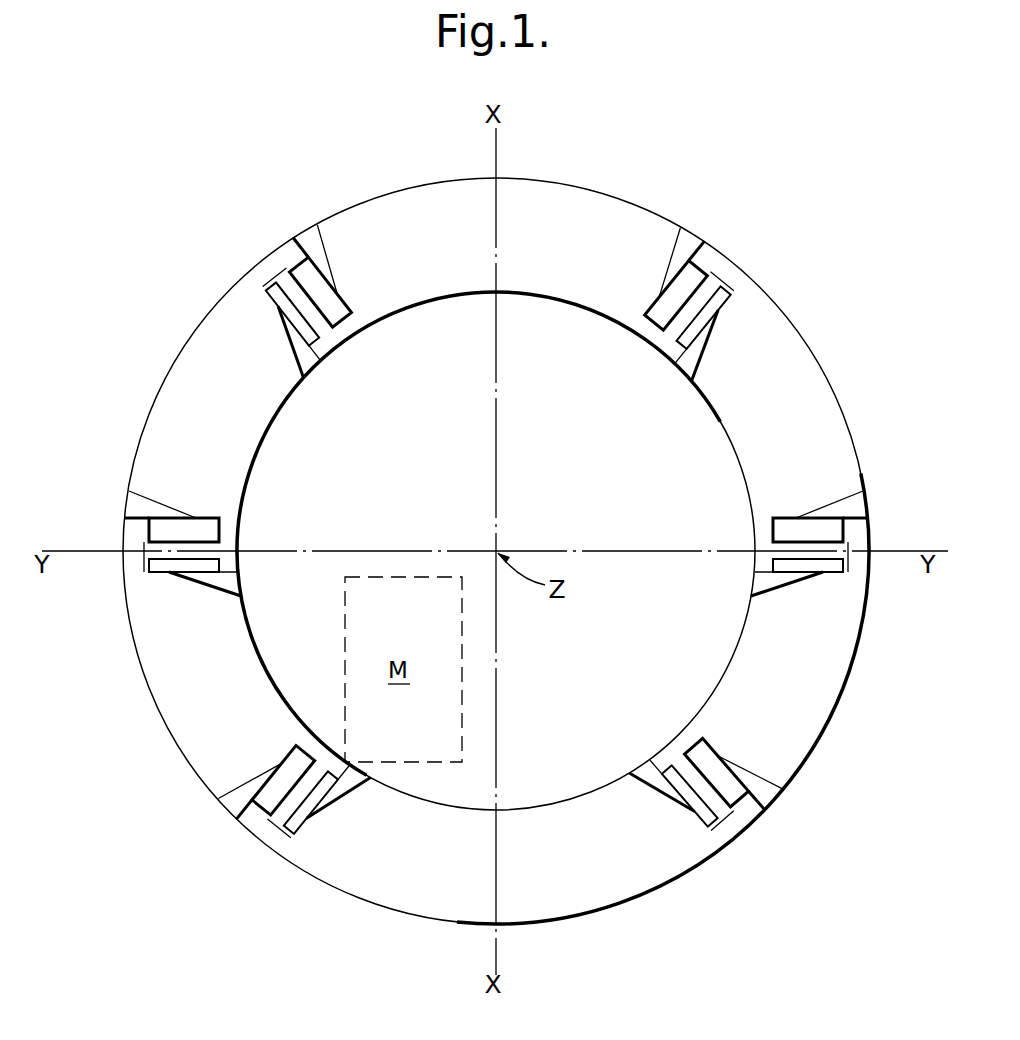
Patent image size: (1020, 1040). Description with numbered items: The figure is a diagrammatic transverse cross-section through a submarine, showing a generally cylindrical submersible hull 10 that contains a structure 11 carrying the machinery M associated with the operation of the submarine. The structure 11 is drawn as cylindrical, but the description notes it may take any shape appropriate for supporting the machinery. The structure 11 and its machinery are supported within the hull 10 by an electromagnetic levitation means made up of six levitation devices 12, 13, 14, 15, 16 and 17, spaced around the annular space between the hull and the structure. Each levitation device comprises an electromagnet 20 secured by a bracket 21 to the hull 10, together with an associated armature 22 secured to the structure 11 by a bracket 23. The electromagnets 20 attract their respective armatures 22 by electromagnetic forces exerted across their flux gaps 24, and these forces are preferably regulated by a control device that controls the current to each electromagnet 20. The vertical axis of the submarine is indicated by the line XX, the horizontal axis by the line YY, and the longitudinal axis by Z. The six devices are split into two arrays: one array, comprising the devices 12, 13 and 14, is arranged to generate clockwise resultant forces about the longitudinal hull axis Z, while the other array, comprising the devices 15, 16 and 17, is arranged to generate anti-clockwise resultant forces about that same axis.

The submersible hull 10 is at (163, 367).
The structure 11 is at (258, 428).
The levitation device 12 is at (271, 278).
The levitation device 13 is at (146, 549).
The levitation device 14 is at (273, 820).
The levitation device 15 is at (716, 278).
The levitation device 16 is at (848, 548).
The levitation device 17 is at (728, 814).
The electromagnet 20 is at (657, 328).
The bracket 21 is at (658, 280).
The armature 22 is at (722, 300).
The bracket 23 is at (692, 370).
The flux gap 24 is at (317, 332).